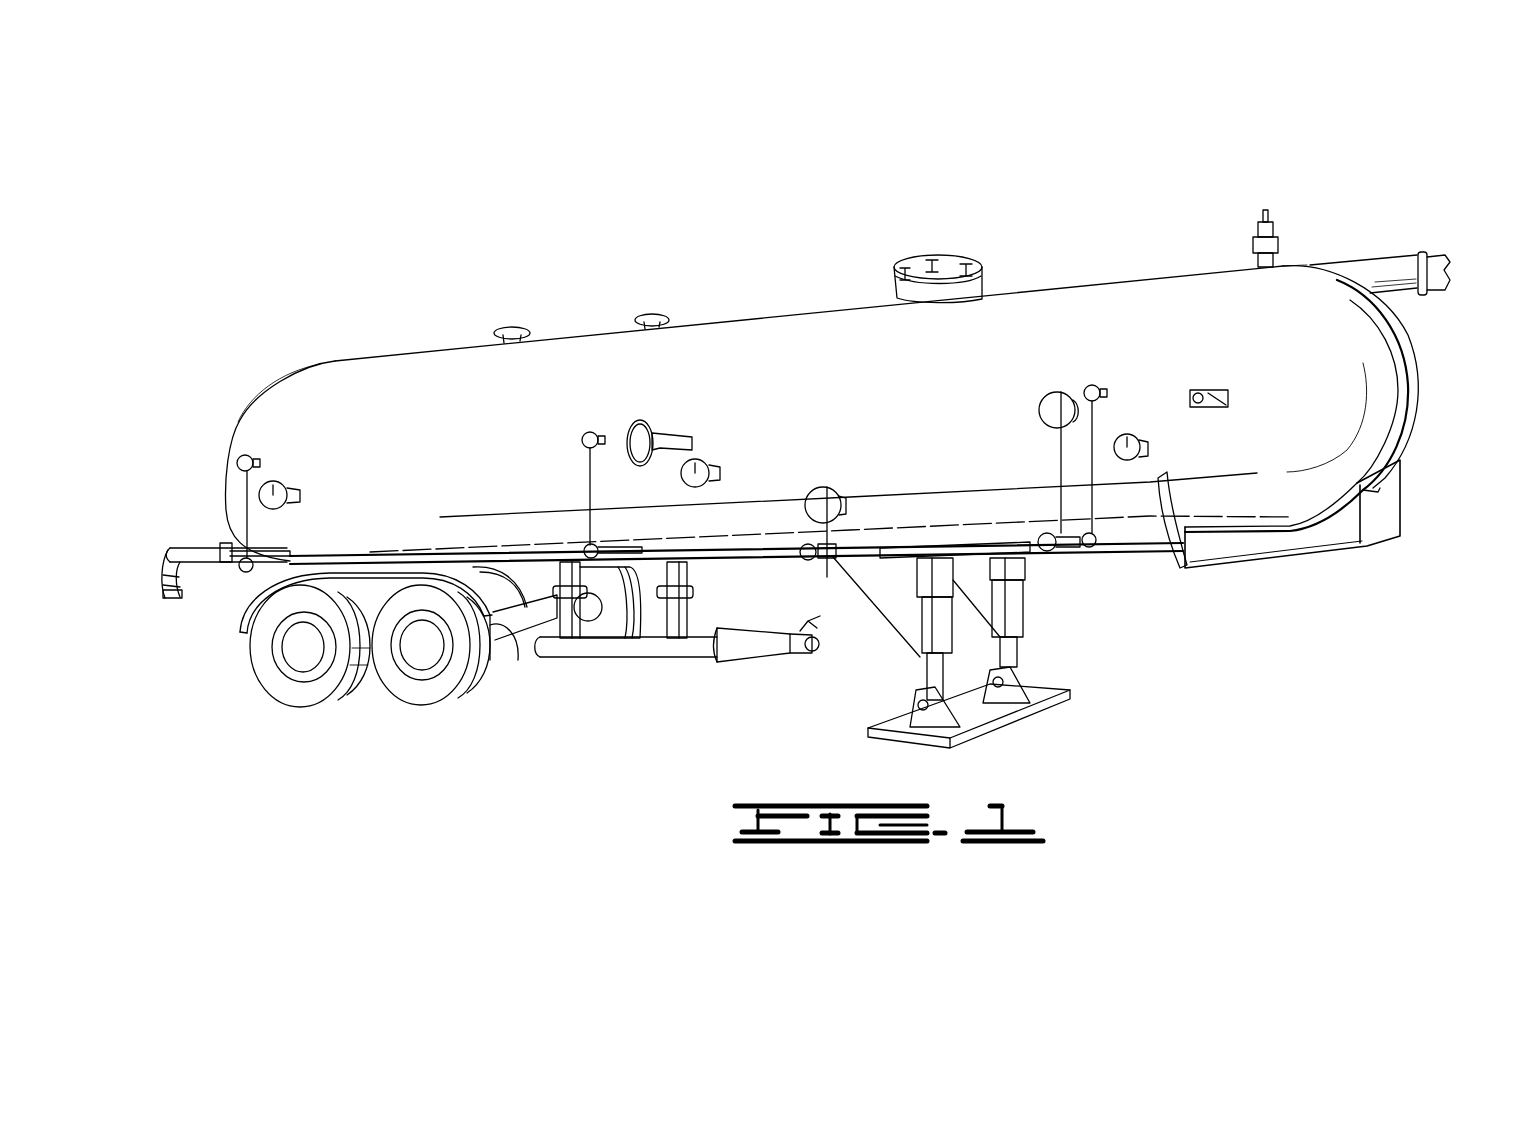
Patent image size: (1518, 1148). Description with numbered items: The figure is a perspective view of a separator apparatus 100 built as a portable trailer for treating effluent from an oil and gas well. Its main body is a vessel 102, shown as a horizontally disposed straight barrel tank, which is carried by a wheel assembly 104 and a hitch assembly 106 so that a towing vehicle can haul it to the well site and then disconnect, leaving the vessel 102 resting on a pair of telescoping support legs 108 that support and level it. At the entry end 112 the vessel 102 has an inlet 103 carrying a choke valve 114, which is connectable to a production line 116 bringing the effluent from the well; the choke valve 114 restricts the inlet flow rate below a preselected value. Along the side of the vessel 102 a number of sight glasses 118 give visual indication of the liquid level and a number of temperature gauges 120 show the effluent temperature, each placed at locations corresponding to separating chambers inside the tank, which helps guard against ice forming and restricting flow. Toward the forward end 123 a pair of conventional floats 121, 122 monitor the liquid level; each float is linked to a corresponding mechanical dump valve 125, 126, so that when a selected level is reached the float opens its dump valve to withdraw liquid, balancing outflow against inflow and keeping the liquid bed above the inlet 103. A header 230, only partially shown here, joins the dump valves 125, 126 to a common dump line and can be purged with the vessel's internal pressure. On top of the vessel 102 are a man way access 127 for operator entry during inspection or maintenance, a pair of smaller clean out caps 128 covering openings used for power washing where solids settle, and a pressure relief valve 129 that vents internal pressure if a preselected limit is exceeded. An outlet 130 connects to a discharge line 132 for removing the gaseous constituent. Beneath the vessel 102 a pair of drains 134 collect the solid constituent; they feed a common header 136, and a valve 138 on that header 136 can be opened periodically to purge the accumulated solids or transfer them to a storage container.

The separator apparatus 100 is at (533, 283).
The vessel 102 is at (354, 361).
The inlet 103 is at (262, 550).
The wheel assembly 104 is at (389, 716).
The hitch assembly 106 is at (1302, 568).
The telescoping support legs 108 is at (1035, 613).
The entry end 112 is at (247, 394).
The choke valve 114 is at (213, 532).
The production line 116 is at (167, 600).
The sight glass 118 is at (250, 478).
The temperature gauge 120 is at (288, 489).
The float 121 is at (835, 490).
The float 122 is at (1040, 410).
The forward end 123 is at (1135, 275).
The mechanical dump valve 125 is at (800, 542).
The mechanical dump valve 126 is at (1050, 535).
The man way access 127 is at (945, 255).
The clean out caps 128 is at (512, 330).
The pressure relief valve 129 is at (1272, 213).
The outlet 130 is at (1378, 262).
The discharge line 132 is at (1440, 293).
The drains 134 is at (565, 578).
The header 136 is at (612, 647).
The valve 138 is at (800, 641).
The header 230 is at (890, 527).